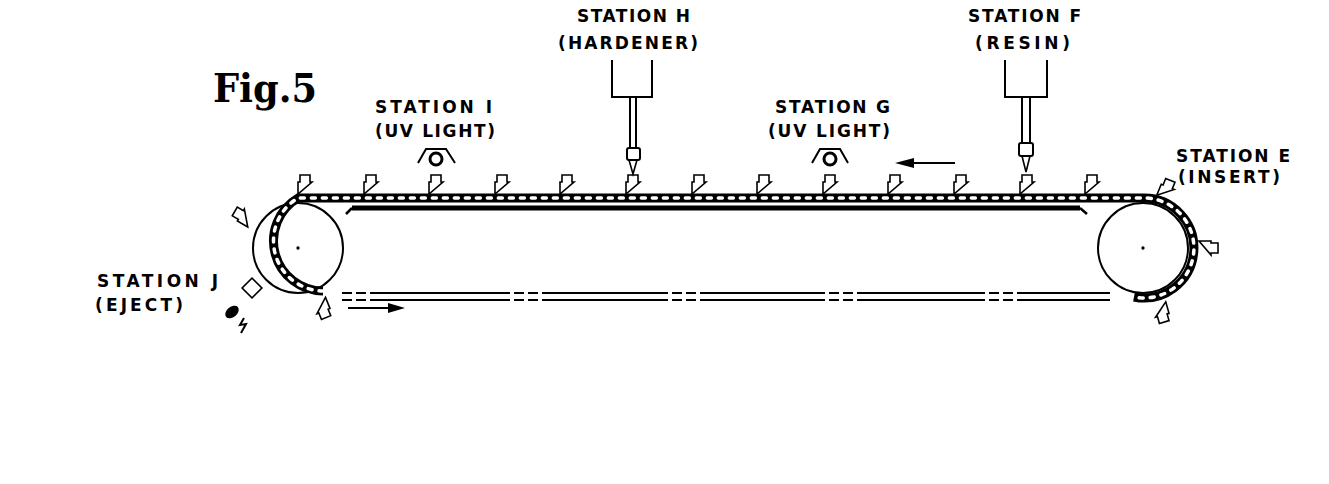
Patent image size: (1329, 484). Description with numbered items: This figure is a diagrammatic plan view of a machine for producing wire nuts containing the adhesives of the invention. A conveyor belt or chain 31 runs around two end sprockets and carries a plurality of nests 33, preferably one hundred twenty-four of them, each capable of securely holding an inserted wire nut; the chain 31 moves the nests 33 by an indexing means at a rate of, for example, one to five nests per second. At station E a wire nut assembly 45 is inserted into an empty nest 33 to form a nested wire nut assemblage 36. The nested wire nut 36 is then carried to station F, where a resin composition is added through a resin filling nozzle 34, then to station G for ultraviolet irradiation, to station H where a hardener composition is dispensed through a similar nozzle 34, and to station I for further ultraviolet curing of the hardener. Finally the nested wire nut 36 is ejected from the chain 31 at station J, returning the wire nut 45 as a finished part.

The chain 31 is at (545, 185).
The nest 33 is at (328, 310).
The resin filling nozzle 34 is at (629, 168).
The nested wire nut assemblage 36 is at (758, 178).
The wire nut assembly 45 is at (300, 178).